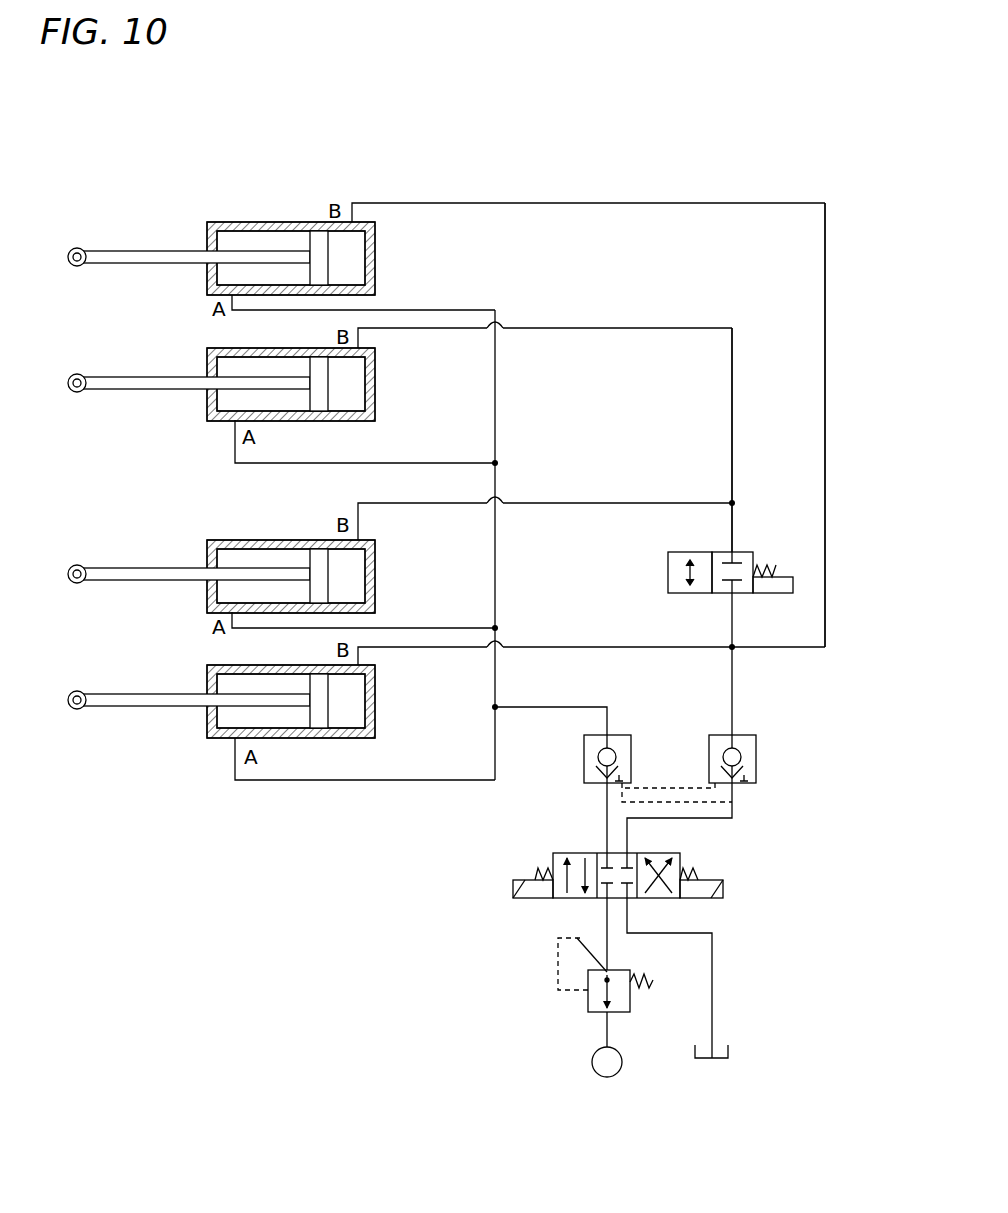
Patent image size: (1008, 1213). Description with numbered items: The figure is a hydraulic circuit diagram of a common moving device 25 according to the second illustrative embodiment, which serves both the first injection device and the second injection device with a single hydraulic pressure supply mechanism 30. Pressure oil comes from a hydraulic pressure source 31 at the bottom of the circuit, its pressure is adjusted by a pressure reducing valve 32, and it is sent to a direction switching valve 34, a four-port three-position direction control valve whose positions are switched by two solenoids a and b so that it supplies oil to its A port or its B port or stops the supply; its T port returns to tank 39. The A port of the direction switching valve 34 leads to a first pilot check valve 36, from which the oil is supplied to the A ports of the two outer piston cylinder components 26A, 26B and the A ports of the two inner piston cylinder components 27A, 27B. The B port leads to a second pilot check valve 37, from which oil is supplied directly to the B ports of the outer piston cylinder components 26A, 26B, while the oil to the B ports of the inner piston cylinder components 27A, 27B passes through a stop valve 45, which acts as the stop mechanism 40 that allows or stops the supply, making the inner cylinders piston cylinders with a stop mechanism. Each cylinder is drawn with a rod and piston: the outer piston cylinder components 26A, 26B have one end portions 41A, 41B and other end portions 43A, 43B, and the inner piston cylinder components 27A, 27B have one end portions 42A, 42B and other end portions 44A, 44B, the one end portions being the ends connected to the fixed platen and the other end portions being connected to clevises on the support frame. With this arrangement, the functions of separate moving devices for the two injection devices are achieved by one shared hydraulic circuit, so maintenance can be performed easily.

The outer piston cylinder component 26B is at (232, 222).
The inner piston cylinder component 27B is at (207, 408).
The inner piston cylinder component 27A is at (232, 540).
The outer piston cylinder component 26A is at (207, 730).
The one end portion 41B is at (84, 246).
The one end portion 42B is at (82, 394).
The one end portion 42A is at (78, 565).
The one end portion 41A is at (78, 712).
The other end portion 43B is at (377, 245).
The other end portion 44B is at (377, 373).
The other end portion 44A is at (377, 571).
The other end portion 43A is at (377, 695).
The stop mechanism 40 is at (793, 585).
The stop valve 45 is at (786, 593).
The first pilot check valve 36 is at (583, 775).
The second pilot check valve 37 is at (757, 755).
The direction switching valve 34 is at (723, 880).
The pressure reducing valve 32 is at (588, 985).
The hydraulic pressure source 31 is at (592, 1062).
The tank 39 is at (715, 1050).
The hydraulic pressure supply mechanism 30 is at (693, 162).
The moving device 25 is at (797, 170).